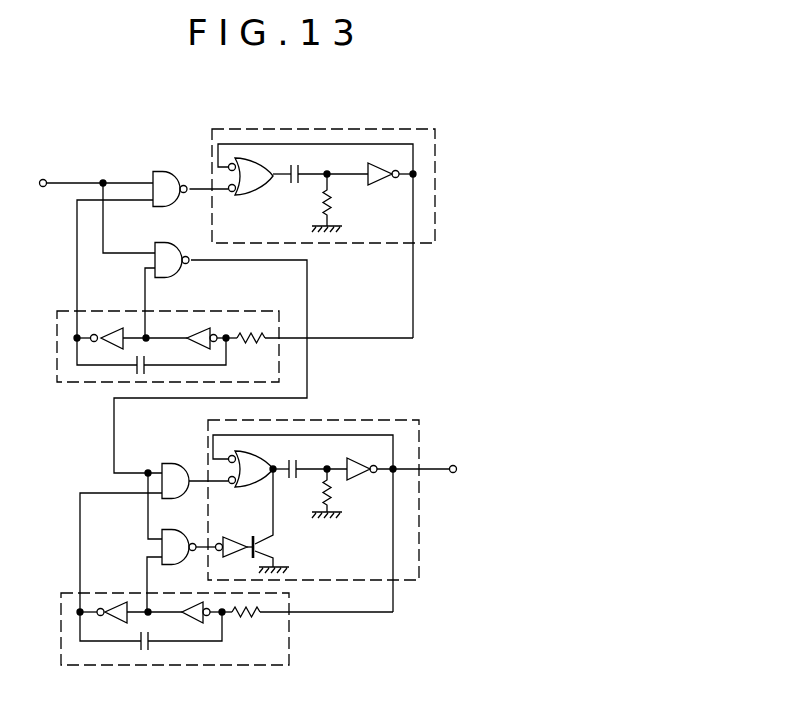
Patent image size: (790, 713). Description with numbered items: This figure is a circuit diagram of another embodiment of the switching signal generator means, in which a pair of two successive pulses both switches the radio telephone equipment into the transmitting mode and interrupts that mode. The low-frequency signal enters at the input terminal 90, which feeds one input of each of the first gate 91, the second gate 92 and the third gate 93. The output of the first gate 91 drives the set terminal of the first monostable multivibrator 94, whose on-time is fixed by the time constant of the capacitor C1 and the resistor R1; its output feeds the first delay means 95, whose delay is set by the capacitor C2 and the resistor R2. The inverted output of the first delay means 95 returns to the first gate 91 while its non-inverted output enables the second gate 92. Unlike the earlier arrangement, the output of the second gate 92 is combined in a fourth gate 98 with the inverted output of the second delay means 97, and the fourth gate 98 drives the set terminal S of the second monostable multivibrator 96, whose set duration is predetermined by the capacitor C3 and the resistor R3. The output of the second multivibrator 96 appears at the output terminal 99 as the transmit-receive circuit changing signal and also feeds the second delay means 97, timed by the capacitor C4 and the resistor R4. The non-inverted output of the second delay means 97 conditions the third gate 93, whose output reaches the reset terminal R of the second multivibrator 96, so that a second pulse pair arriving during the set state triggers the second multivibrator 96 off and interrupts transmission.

The input terminal 90 is at (44, 176).
The first gate 91 is at (165, 171).
The second gate 92 is at (167, 243).
The third gate 93 is at (188, 565).
The first monostable multivibrator 94 is at (325, 162).
The first delay means 95 is at (235, 325).
The second monostable multivibrator 96 is at (340, 478).
The second delay means 97 is at (227, 650).
The fourth gate 98 is at (173, 463).
The output terminal 99 is at (456, 472).
The capacitor C1 is at (292, 189).
The resistor R1 is at (332, 205).
The capacitor C2 is at (147, 353).
The resistor R2 is at (253, 343).
The capacitor C3 is at (292, 480).
The resistor R3 is at (328, 495).
The capacitor C4 is at (150, 653).
The resistor R4 is at (245, 615).